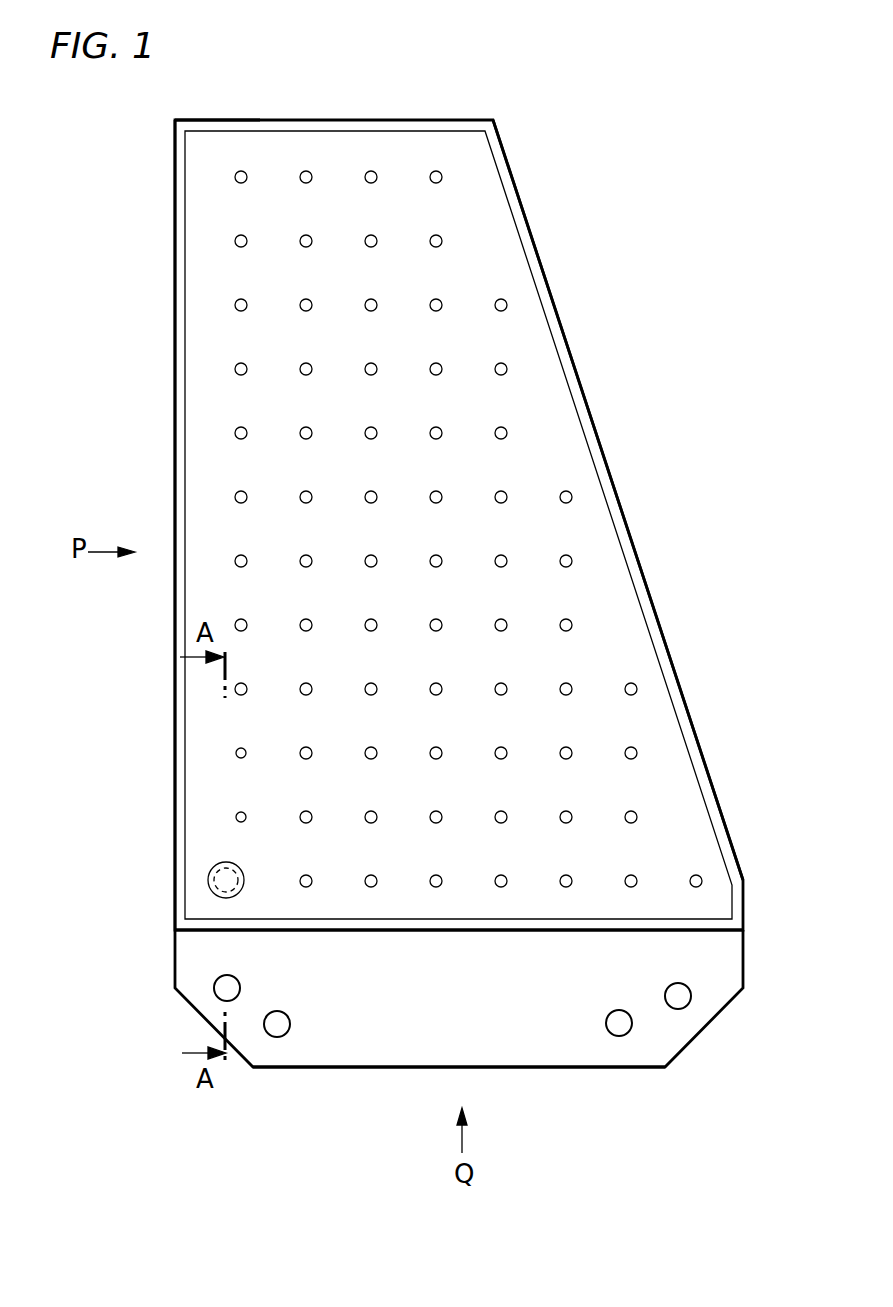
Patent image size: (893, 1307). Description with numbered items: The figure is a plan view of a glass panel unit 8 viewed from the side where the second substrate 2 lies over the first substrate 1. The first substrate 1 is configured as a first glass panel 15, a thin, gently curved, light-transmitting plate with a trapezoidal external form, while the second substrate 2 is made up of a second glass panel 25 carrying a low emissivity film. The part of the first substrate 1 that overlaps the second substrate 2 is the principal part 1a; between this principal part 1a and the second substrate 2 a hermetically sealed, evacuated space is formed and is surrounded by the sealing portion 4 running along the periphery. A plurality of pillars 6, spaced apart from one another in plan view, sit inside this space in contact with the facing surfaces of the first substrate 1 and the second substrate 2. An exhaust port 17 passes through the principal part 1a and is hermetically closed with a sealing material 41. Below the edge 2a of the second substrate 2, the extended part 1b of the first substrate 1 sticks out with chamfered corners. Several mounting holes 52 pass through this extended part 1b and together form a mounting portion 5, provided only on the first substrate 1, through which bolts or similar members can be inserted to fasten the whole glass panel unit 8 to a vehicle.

The first substrate 1 is at (537, 483).
The principal part 1a is at (545, 593).
The extended part 1b is at (420, 1033).
The second substrate 2 is at (480, 277).
The edge of the second substrate 2a is at (463, 930).
The sealing portion 4 is at (175, 315).
The mounting portion 5 is at (672, 1030).
The pillars 6 is at (247, 750).
The glass panel unit 8 is at (175, 163).
The first glass panel 15 is at (523, 1028).
The exhaust port 17 is at (210, 888).
The second glass panel 25 is at (495, 343).
The sealing material 41 is at (212, 878).
The mounting holes 52 is at (235, 980).